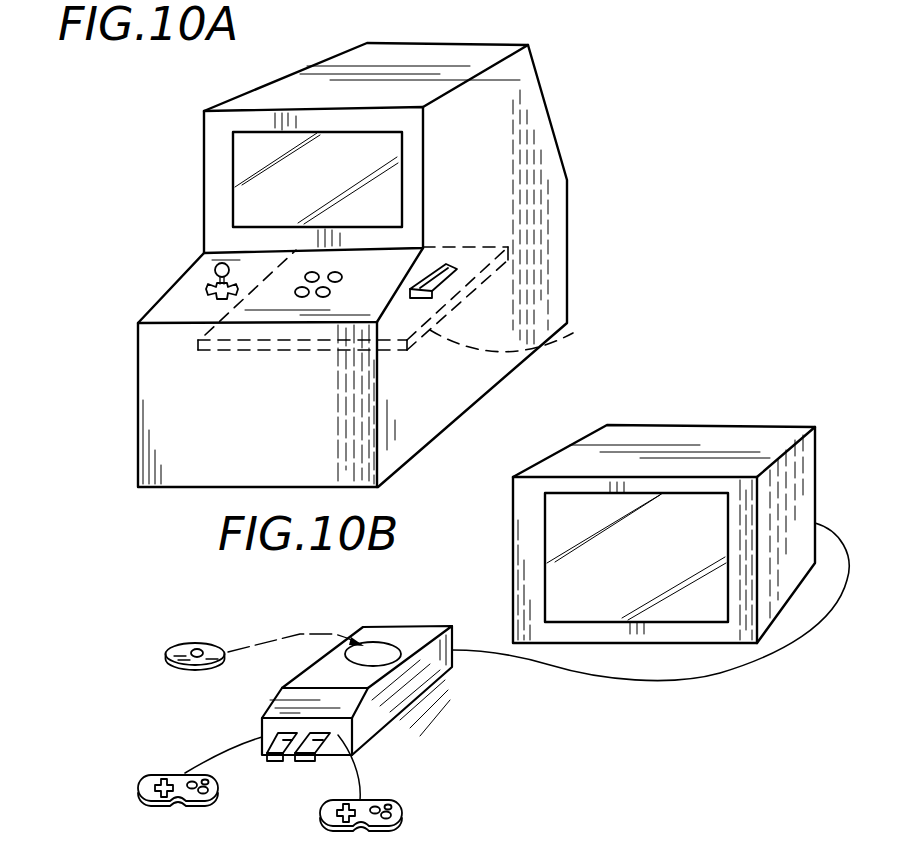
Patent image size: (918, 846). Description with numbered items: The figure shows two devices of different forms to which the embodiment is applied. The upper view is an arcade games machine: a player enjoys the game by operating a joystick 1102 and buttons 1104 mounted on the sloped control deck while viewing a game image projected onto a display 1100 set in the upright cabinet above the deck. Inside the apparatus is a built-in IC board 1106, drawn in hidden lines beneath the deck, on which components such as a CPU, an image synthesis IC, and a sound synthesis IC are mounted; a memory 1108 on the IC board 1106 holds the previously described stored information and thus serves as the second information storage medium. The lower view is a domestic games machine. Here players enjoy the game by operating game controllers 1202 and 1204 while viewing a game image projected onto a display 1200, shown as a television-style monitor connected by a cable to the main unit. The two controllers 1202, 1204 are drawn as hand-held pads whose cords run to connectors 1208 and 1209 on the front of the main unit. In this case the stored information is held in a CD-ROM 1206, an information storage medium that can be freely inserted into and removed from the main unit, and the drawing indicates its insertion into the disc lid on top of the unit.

In FIG. 10A, the display 1100 is at (253, 166).
In FIG. 10A, the joystick 1102 is at (212, 284).
In FIG. 10A, the buttons 1104 is at (312, 298).
In FIG. 10A, the IC board 1106 is at (573, 333).
In FIG. 10A, the memory 1108 is at (440, 282).
In FIG. 10B, the display 1200 is at (580, 563).
In FIG. 10B, the game controller 1202 is at (140, 796).
In FIG. 10B, the game controller 1204 is at (432, 802).
In FIG. 10B, the CD-ROM 1206 is at (187, 647).
In FIG. 10B, the first controller connector 1208 is at (272, 735).
In FIG. 10B, the second controller connector 1209 is at (303, 759).